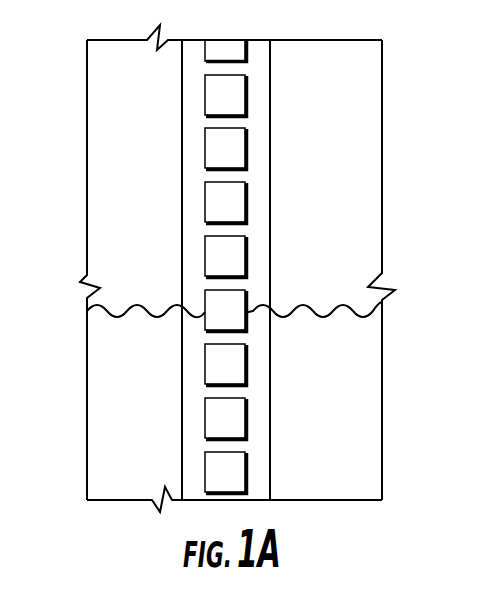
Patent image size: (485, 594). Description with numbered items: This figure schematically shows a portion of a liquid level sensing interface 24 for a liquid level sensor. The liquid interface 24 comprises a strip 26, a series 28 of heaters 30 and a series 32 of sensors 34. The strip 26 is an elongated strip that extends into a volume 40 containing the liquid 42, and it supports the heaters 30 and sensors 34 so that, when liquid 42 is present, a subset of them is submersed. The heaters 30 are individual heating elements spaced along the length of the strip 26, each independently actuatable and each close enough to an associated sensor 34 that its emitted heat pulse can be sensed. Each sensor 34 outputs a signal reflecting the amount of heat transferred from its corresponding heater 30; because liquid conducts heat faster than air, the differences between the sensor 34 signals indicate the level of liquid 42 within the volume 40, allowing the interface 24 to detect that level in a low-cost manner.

The liquid level sensing interface 24 is at (135, 146).
The strip 26 is at (270, 112).
The series of heaters 28 is at (245, 152).
The heater 30 is at (245, 143).
The series of sensors 32 is at (205, 210).
The sensor 34 is at (245, 101).
The volume 40 is at (382, 243).
The liquid 42 is at (118, 318).